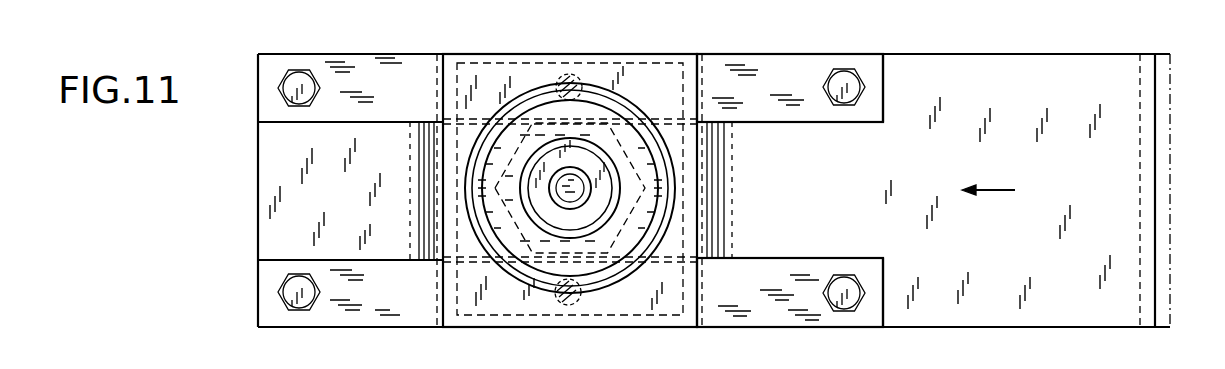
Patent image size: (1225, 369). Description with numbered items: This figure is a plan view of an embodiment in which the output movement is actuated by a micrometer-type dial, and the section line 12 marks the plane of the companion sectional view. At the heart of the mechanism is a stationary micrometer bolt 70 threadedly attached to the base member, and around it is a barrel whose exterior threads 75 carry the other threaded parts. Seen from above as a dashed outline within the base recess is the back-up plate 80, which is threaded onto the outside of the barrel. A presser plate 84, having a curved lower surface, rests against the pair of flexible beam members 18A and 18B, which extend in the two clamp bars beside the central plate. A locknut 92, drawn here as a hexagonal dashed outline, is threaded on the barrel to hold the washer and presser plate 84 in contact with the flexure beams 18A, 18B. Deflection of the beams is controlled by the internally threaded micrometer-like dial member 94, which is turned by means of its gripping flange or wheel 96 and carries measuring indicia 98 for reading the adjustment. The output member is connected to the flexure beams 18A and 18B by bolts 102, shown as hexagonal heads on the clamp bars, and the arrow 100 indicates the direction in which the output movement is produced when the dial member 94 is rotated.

The section line 12 is at (224, 232).
The flexible beam member 18A is at (773, 273).
The flexible beam member 18B is at (761, 107).
The micrometer bolt 70 is at (577, 178).
The exterior threads of barrel 75 is at (527, 173).
The back-up plate 80 is at (632, 315).
The presser plate 84 is at (510, 303).
The locknut 92 is at (497, 212).
The dial member 94 is at (495, 252).
The gripping flange 96 is at (650, 242).
The measuring indicia 98 is at (512, 138).
The output movement direction 100 is at (1022, 241).
The bolts 102 is at (844, 100).